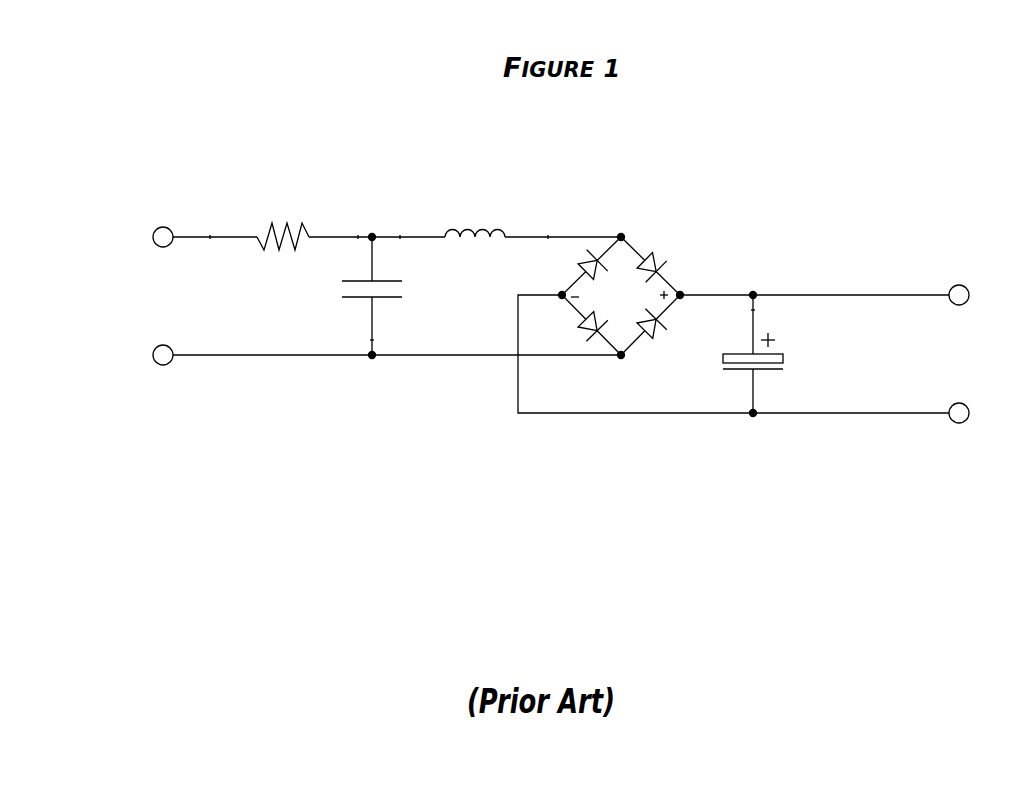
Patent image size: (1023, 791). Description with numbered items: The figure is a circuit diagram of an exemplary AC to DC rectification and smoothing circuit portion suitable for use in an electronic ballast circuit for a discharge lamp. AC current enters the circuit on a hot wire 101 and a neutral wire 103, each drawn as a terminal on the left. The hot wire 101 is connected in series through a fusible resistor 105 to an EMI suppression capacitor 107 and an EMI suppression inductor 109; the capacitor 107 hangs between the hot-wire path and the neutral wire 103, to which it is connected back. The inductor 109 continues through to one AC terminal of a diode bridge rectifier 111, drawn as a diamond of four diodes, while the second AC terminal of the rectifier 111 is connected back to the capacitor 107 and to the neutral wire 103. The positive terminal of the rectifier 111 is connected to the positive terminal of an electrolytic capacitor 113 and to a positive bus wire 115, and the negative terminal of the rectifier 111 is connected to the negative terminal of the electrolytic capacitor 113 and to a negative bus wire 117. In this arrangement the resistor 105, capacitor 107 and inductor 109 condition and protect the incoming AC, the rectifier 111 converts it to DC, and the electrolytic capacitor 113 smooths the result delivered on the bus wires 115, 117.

The hot wire 101 is at (148, 237).
The neutral wire 103 is at (148, 355).
The fusible resistor 105 is at (267, 244).
The EMI suppression capacitor 107 is at (361, 296).
The EMI suppression inductor 109 is at (467, 248).
The diode bridge rectifier 111 is at (657, 232).
The electrolytic capacitor 113 is at (769, 354).
The positive bus wire 115 is at (974, 295).
The negative bus wire 117 is at (974, 413).